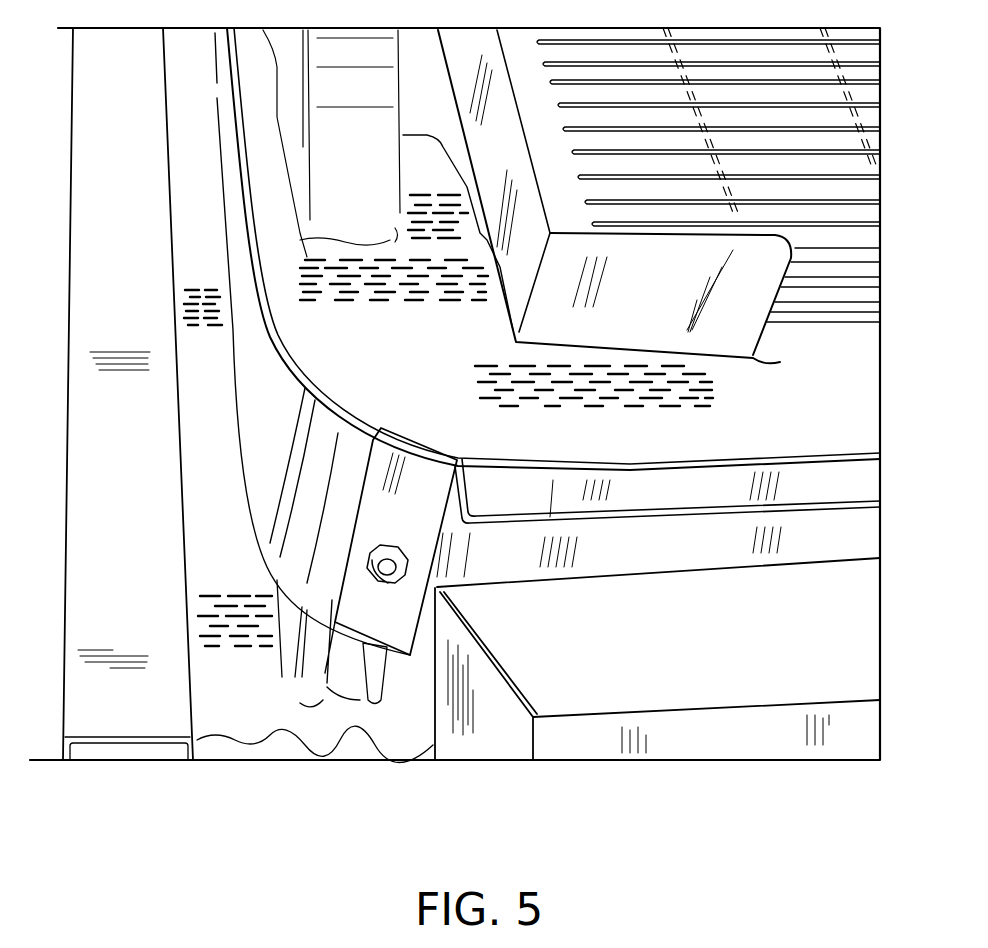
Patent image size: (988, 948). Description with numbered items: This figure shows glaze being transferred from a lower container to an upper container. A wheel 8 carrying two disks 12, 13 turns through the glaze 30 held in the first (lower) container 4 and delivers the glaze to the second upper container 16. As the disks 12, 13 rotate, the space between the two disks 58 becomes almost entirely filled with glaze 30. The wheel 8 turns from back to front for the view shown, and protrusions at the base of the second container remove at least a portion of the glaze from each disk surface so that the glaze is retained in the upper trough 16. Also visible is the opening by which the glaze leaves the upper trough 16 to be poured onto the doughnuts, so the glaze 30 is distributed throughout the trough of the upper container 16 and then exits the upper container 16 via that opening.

The first (lower) container 4 is at (267, 750).
The wheel 8 is at (360, 170).
The disk 12 is at (313, 668).
The disk 13 is at (380, 665).
The second upper container 16 is at (780, 210).
The glaze 30 is at (267, 677).
The space between the two disks 58 is at (343, 670).